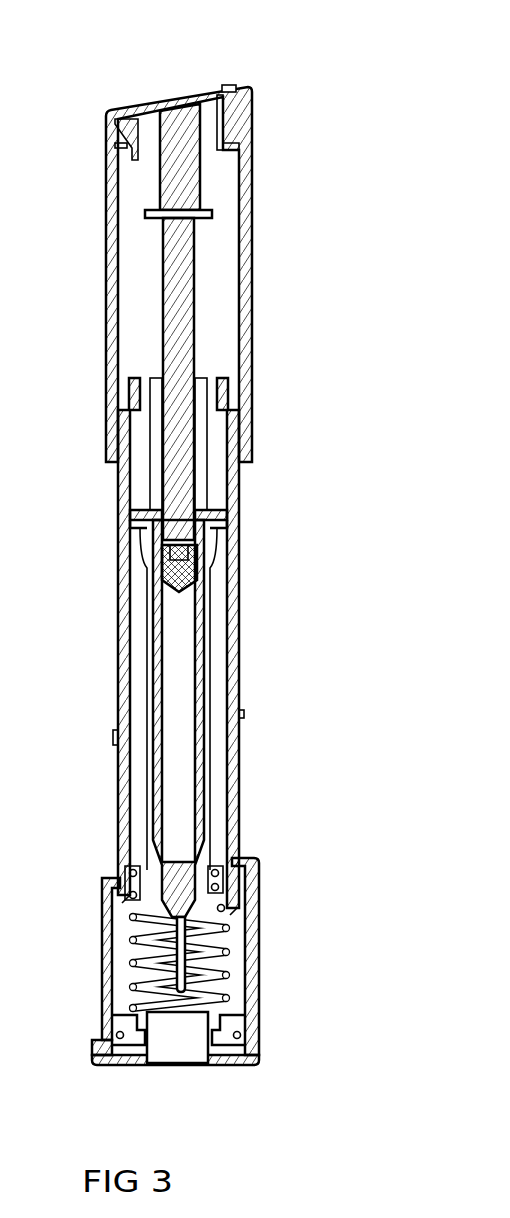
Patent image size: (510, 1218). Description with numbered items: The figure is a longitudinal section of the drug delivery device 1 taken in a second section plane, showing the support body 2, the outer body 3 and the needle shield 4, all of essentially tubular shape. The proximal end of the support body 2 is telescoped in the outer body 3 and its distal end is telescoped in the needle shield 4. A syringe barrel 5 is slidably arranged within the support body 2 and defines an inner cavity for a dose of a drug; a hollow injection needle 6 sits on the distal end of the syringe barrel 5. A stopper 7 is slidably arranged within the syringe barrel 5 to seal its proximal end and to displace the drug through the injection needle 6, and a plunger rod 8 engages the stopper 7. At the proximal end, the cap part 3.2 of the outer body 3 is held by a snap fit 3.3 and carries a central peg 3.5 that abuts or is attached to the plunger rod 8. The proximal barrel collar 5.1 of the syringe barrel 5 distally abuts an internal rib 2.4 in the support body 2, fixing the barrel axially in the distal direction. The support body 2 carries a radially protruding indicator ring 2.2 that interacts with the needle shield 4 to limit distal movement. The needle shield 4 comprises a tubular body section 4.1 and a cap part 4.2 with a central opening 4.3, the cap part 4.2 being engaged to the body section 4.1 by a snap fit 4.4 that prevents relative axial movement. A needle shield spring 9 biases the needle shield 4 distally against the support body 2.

The drug delivery device 1 is at (114, 34).
The support body 2 is at (180, 646).
The indicator ring 2.2 is at (245, 715).
The internal rib 2.4 is at (218, 524).
The outer body 3 is at (182, 257).
The cap part 3.2 is at (238, 92).
The snap fit 3.3 is at (122, 146).
The central peg 3.5 is at (163, 182).
The needle shield 4 is at (207, 979).
The body section 4.1 is at (175, 961).
The cap part 4.2 is at (125, 1057).
The central opening 4.3 is at (200, 1057).
The snap fit 4.4 is at (135, 1033).
The syringe barrel 5 is at (157, 697).
The barrel collar 5.1 is at (132, 512).
The injection needle 6 is at (165, 962).
The stopper 7 is at (165, 568).
The plunger rod 8 is at (165, 250).
The needle shield spring 9 is at (226, 952).